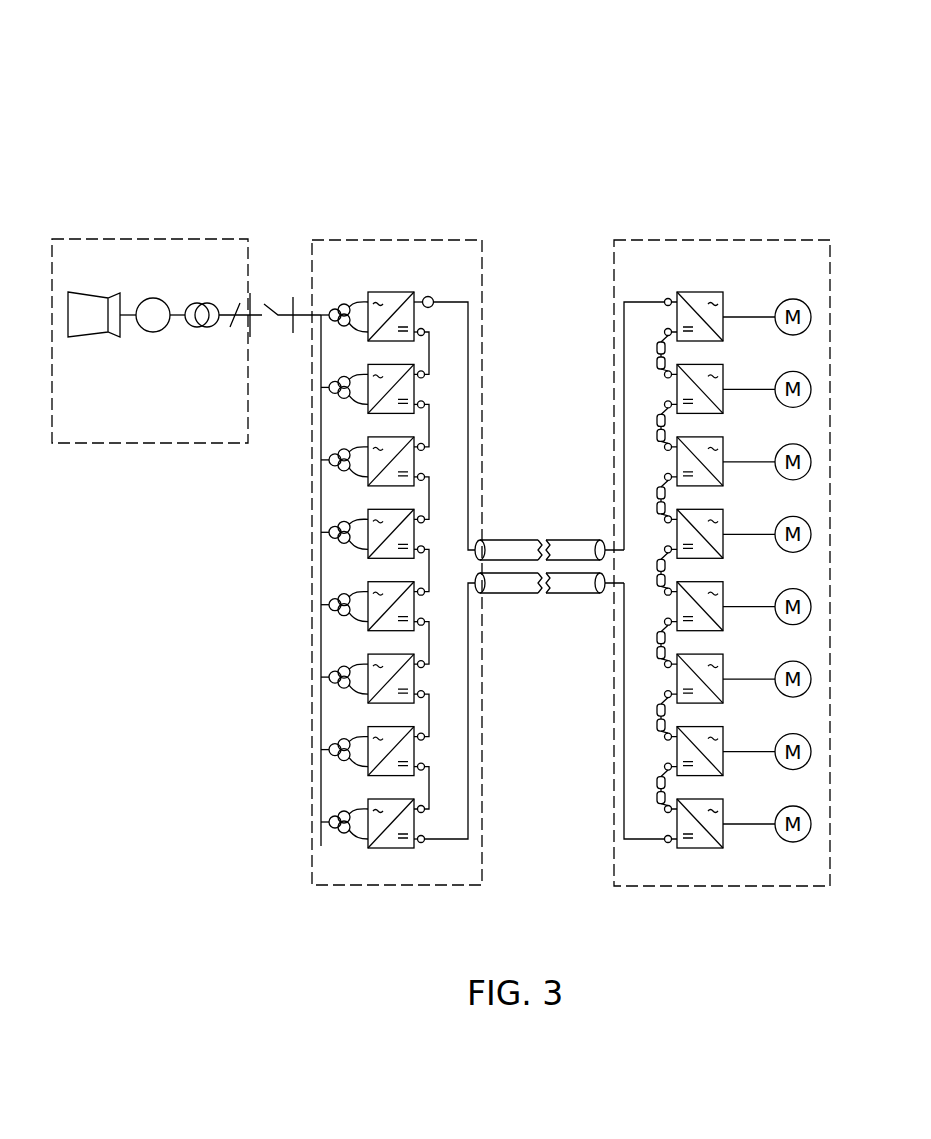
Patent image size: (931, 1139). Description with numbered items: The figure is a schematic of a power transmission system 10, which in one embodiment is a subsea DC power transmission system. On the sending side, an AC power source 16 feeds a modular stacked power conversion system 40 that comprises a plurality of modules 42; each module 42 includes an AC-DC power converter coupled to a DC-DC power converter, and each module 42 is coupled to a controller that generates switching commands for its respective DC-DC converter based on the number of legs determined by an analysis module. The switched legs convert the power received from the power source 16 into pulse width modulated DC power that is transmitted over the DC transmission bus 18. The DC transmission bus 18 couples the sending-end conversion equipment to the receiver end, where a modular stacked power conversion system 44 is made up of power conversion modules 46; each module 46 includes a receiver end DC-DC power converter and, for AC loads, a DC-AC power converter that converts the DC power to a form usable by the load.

The power transmission system 10 is at (712, 67).
The AC power source 16 is at (153, 239).
The DC transmission bus 18 is at (510, 540).
The modular stacked power conversion system 40 is at (366, 535).
The modules 42 is at (368, 582).
The modular stacked power conversion system 44 is at (722, 536).
The power conversion modules 46 is at (723, 655).